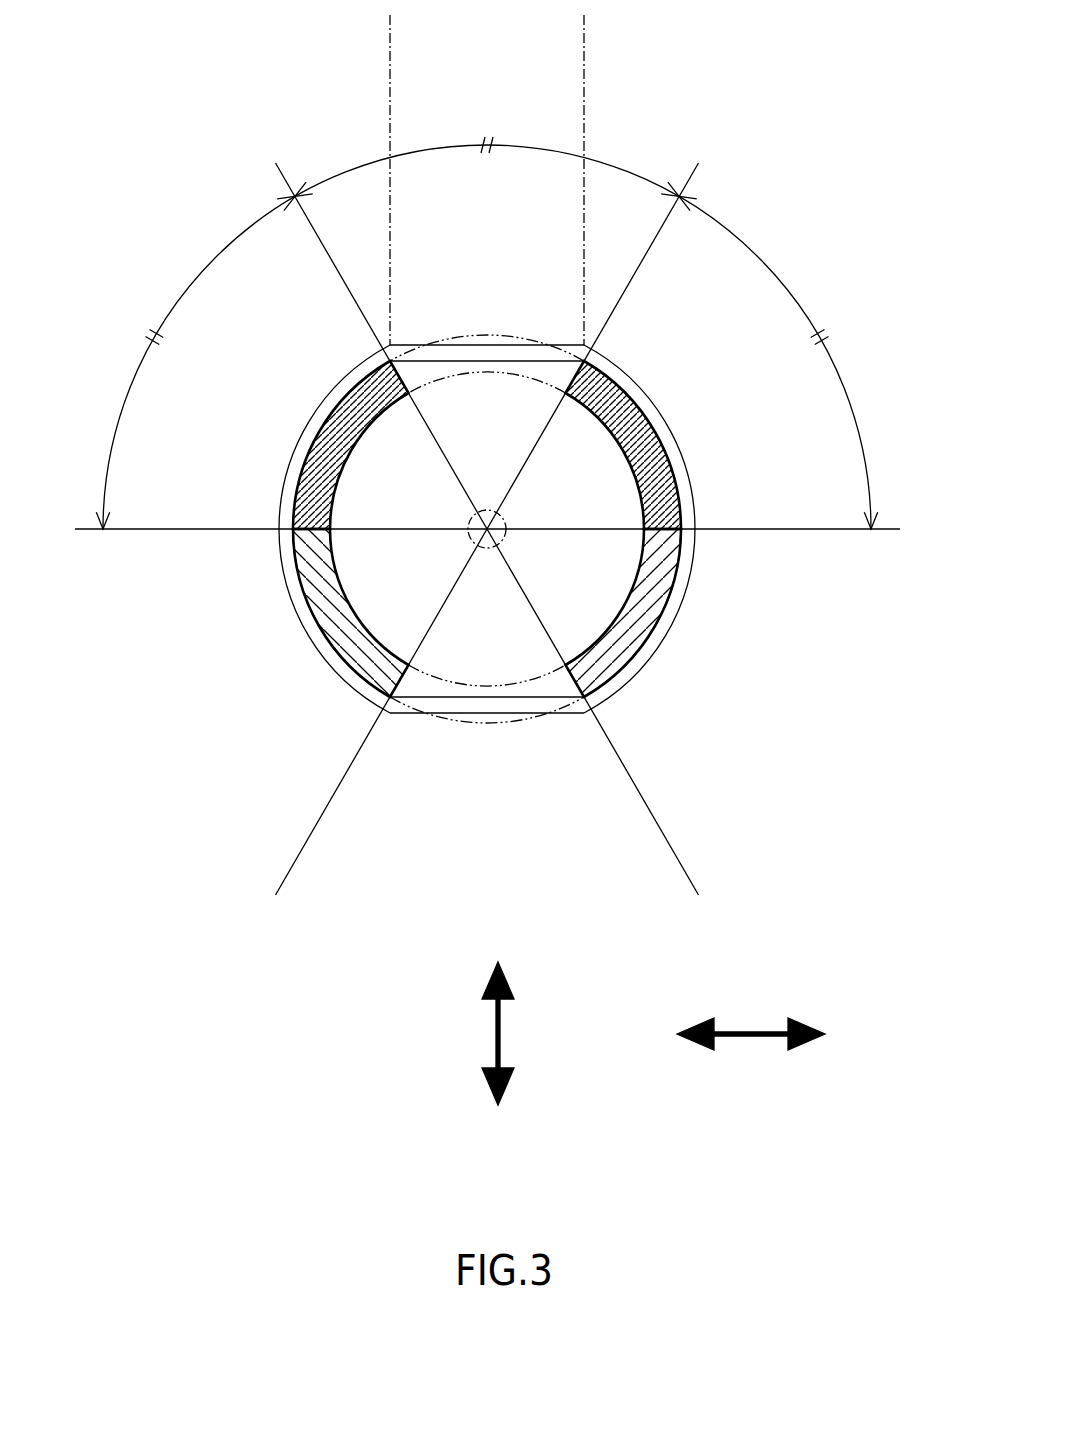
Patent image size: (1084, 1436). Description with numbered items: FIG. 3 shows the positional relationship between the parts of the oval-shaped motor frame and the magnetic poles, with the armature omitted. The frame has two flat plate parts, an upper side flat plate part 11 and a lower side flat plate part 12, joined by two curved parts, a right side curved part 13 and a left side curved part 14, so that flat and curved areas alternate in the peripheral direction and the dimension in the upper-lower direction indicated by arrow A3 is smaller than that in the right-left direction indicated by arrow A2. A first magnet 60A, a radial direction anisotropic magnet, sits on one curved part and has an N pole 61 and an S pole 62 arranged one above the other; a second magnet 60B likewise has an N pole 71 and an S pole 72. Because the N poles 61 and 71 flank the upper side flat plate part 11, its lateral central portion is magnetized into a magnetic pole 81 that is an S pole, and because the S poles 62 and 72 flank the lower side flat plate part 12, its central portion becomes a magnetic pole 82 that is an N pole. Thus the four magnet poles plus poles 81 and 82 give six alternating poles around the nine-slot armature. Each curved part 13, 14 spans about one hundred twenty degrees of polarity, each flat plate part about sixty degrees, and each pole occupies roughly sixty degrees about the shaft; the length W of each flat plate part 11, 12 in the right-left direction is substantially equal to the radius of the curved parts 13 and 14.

The upper side flat plate part 11 is at (447, 338).
The lower side flat plate part 12 is at (457, 708).
The right side curved part 13 is at (283, 502).
The left side curved part 14 is at (682, 590).
The first magnet 60A is at (300, 580).
The second magnet 60B is at (680, 542).
The N pole 61 is at (360, 486).
The S pole 62 is at (340, 612).
The N pole 71 is at (650, 450).
The S pole 72 is at (612, 635).
The magnetic pole 81 is at (520, 330).
The magnetic pole 82 is at (522, 718).
The arrow indicating right-left direction A2 is at (768, 1028).
The arrow indicating upper-lower direction A3 is at (497, 1023).
The length of flat plate part in right-left direction W is at (390, 63).